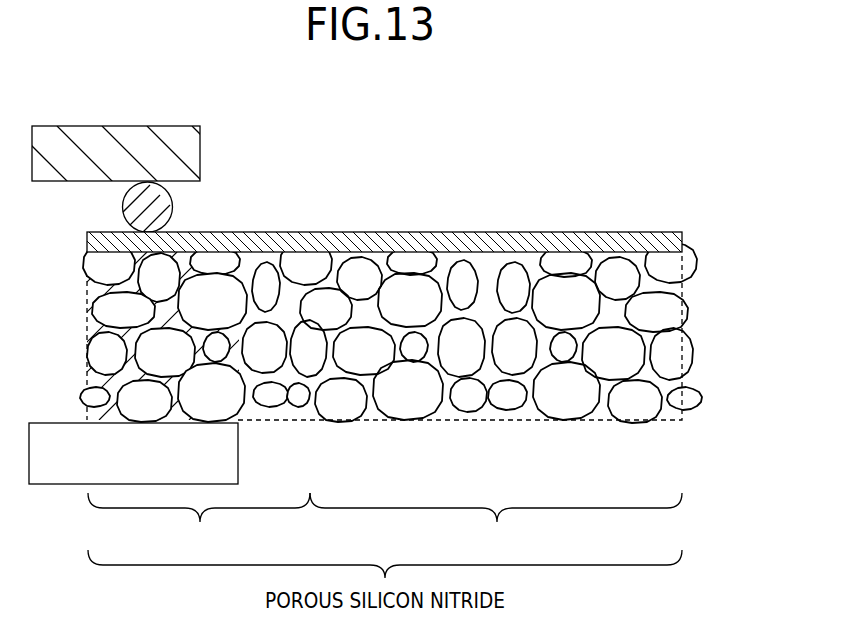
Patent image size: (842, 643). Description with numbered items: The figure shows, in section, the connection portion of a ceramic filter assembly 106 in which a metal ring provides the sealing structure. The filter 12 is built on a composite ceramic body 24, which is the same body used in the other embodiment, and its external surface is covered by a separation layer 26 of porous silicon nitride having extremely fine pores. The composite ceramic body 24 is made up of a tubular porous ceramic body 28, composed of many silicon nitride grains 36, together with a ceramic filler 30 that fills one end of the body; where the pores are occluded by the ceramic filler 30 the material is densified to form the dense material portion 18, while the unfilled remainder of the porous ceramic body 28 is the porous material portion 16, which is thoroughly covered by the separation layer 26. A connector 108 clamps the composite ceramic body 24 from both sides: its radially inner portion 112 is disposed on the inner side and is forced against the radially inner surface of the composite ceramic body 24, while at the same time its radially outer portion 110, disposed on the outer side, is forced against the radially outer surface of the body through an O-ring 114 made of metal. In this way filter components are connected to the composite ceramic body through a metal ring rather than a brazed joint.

The filter assembly 106 is at (648, 105).
The connector 108 is at (229, 152).
The radially outer portion 110 is at (98, 140).
The O-ring 114 is at (162, 210).
The filter 12 is at (598, 180).
The separation layer 26 is at (463, 234).
The silicon nitride grains 36 is at (683, 260).
The porous ceramic body 28 is at (692, 323).
The composite ceramic body 24 is at (750, 303).
The ceramic filler 30 is at (88, 380).
The radially inner portion 112 is at (57, 472).
The dense material portion 18 is at (193, 400).
The porous material portion 16 is at (486, 381).